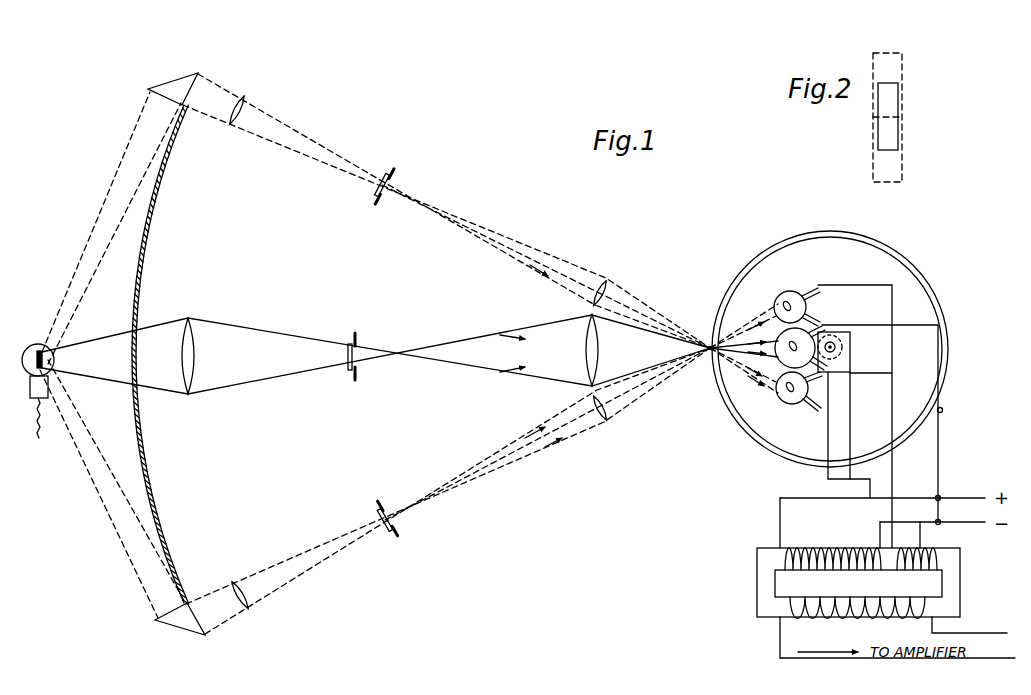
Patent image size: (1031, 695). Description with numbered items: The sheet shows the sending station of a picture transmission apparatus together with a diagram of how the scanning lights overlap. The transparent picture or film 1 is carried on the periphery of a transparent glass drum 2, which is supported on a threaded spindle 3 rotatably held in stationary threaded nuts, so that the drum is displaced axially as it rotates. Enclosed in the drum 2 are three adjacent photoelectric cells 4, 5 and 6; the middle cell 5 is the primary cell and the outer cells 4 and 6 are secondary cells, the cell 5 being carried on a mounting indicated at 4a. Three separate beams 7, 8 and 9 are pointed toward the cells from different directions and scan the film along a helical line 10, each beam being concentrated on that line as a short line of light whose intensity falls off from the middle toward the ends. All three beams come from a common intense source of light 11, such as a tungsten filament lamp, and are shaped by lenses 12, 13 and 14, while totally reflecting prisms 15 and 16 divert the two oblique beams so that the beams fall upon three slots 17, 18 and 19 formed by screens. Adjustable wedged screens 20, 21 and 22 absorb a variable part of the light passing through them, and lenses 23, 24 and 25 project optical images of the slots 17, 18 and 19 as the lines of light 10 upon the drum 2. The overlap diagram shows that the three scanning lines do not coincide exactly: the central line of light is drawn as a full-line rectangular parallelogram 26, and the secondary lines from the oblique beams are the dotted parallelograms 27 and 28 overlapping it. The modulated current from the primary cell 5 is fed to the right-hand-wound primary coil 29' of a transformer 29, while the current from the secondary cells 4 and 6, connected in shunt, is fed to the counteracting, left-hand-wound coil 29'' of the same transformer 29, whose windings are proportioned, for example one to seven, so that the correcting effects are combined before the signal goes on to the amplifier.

In FIG. 1, the film 1 is at (910, 430).
In FIG. 1, the transparent glass drum 2 is at (934, 290).
In FIG. 1, the threaded spindle 3 is at (835, 343).
In FIG. 1, the photoelectric cell 4 is at (792, 295).
In FIG. 1, the cell mounting 4a is at (843, 353).
In FIG. 1, the photoelectric cell 5 is at (810, 333).
In FIG. 1, the photoelectric cell 6 is at (790, 402).
In FIG. 1, the scanning beam 7 is at (112, 508).
In FIG. 1, the scanning beam 8 is at (108, 376).
In FIG. 1, the scanning beam 9 is at (100, 233).
In FIG. 1, the helical line 10 is at (706, 356).
In FIG. 1, the source of light 11 is at (37, 344).
In FIG. 1, the lens 12 is at (243, 104).
In FIG. 1, the lens 13 is at (193, 358).
In FIG. 1, the lens 14 is at (243, 590).
In FIG. 1, the totally reflecting prism 15 is at (176, 88).
In FIG. 1, the totally reflecting prism 16 is at (178, 622).
In FIG. 1, the slot 17 is at (390, 184).
In FIG. 1, the slot 18 is at (357, 347).
In FIG. 1, the slot 19 is at (392, 522).
In FIG. 1, the wedged screen 20 is at (376, 190).
In FIG. 1, the wedged screen 21 is at (348, 362).
In FIG. 1, the wedged screen 22 is at (384, 528).
In FIG. 1, the lens 23 is at (605, 290).
In FIG. 1, the lens 24 is at (597, 350).
In FIG. 1, the lens 25 is at (601, 414).
In FIG. 2, the rectangular parallelogram 26 is at (893, 134).
In FIG. 2, the parallelogram 27 is at (897, 173).
In FIG. 2, the parallelogram 28 is at (897, 69).
In FIG. 1, the transformer 29 is at (886, 603).
In FIG. 1, the primary coil 29' is at (833, 541).
In FIG. 1, the counteracting primary coil 29'' is at (917, 536).